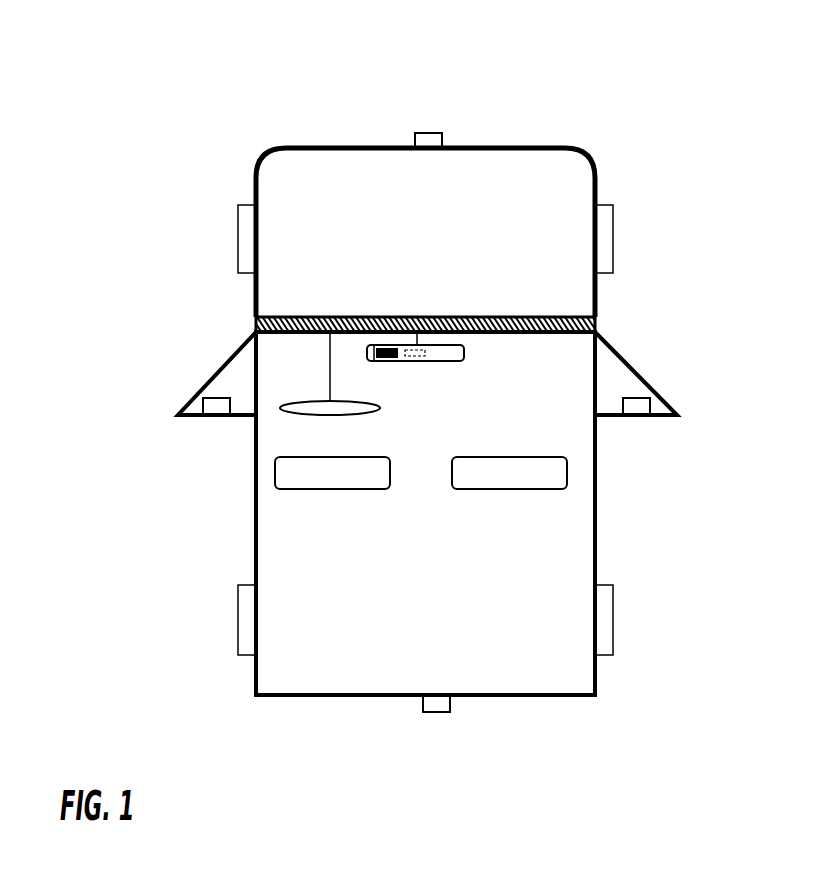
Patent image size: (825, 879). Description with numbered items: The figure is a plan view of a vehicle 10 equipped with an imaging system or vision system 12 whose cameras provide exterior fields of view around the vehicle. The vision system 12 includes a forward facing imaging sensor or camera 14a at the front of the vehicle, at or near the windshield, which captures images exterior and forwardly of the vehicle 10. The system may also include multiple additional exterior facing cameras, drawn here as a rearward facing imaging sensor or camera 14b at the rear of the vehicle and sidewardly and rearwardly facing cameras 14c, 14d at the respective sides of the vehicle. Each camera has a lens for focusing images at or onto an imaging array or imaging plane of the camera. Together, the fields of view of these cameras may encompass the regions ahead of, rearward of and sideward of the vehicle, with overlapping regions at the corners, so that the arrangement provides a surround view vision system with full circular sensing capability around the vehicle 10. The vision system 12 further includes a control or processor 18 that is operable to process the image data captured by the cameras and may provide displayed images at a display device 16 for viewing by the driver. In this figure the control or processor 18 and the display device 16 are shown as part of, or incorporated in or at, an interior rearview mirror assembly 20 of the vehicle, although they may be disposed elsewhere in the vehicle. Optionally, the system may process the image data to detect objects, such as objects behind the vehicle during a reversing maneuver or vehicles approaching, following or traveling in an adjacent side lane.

The vehicle 10 is at (183, 162).
The vision system 12 is at (408, 125).
The forward facing camera 14a is at (428, 134).
The rearward facing camera 14b is at (437, 706).
The sidewardly/rearwardly facing camera 14c is at (213, 405).
The sidewardly/rearwardly facing camera 14d is at (640, 408).
The display device 16 is at (388, 354).
The control or processor 18 is at (425, 345).
The interior rearview mirror assembly 20 is at (438, 355).